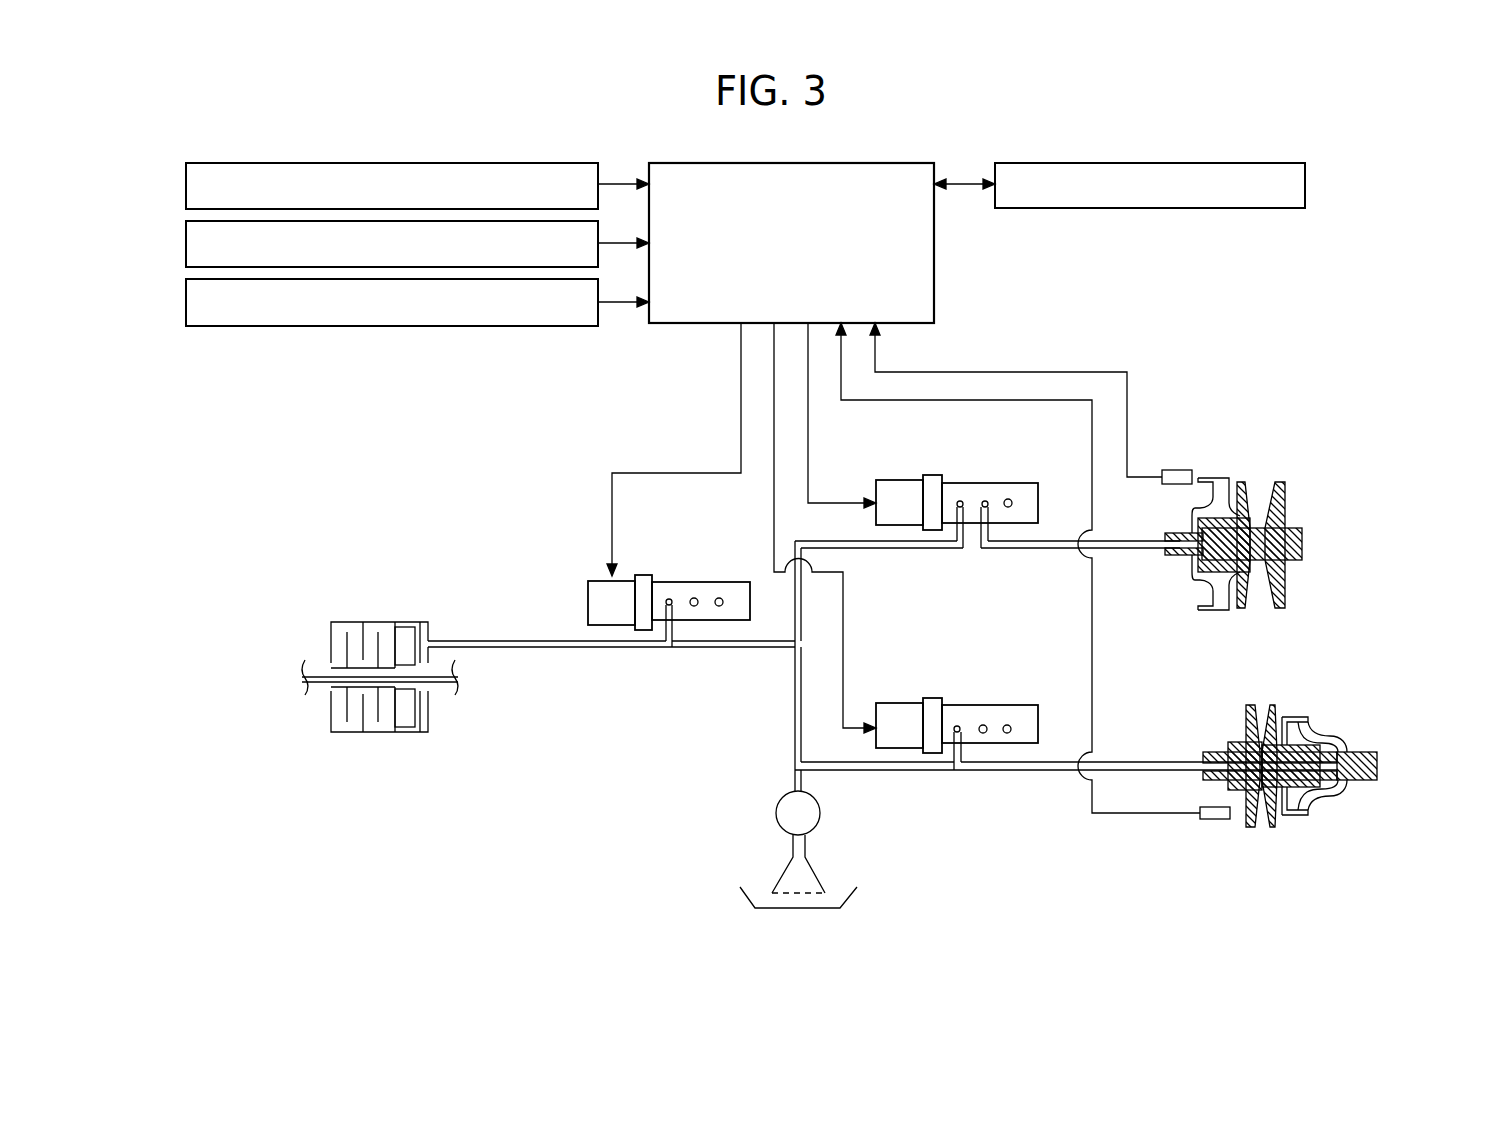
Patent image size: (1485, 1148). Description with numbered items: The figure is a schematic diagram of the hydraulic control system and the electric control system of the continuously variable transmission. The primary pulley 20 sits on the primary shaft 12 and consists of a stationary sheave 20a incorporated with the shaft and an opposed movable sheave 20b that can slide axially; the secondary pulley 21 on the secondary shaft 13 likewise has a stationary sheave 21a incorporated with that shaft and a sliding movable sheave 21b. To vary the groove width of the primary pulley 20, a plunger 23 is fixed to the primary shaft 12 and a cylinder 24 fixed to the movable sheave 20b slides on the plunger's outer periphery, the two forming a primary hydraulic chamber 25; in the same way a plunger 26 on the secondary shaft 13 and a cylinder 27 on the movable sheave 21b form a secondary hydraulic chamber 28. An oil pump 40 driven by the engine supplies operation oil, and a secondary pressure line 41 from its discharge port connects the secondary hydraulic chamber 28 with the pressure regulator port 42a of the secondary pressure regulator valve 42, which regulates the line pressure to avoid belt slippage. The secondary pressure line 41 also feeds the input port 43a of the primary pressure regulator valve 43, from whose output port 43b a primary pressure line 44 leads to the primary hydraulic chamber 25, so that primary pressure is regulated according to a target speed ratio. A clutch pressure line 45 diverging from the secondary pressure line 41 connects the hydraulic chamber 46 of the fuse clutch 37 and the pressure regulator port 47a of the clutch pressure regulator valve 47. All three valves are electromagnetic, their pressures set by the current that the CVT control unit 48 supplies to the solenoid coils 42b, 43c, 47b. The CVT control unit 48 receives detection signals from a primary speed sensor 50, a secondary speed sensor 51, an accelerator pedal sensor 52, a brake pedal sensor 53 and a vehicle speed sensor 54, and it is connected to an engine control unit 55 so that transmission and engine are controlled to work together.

The primary shaft 12 is at (1305, 544).
The secondary shaft 13 is at (1380, 766).
The primary pulley 20 is at (1247, 522).
The stationary sheave 20a is at (1282, 480).
The movable sheave 20b is at (1242, 480).
The secondary pulley 21 is at (1323, 803).
The stationary sheave 21a is at (1250, 830).
The movable sheave 21b is at (1272, 830).
The plunger 23 is at (1192, 512).
The cylinder 24 is at (1218, 612).
The primary hydraulic chamber 25 is at (1212, 580).
The plunger 26 is at (1326, 763).
The cylinder 27 is at (1293, 716).
The secondary hydraulic chamber 28 is at (1315, 828).
The fuse clutch 37 is at (399, 720).
The oil pump 40 is at (776, 814).
The secondary pressure line 41 is at (795, 741).
The secondary pressure regulator valve 42 is at (956, 708).
The pressure regulator port 42a is at (957, 722).
The solenoid coil 42b is at (893, 710).
The primary pressure regulator valve 43 is at (954, 476).
The input port 43a is at (960, 500).
The output port 43b is at (985, 500).
The solenoid coil 43c is at (889, 490).
The primary pressure line 44 is at (1035, 550).
The clutch pressure line 45 is at (699, 650).
The hydraulic chamber 46 is at (428, 728).
The clutch pressure regulator valve 47 is at (657, 586).
The pressure regulator port 47a is at (669, 598).
The solenoid coil 47b is at (590, 585).
The CVT control unit 48 is at (934, 247).
The primary speed sensor 50 is at (1176, 470).
The secondary speed sensor 51 is at (1210, 820).
The accelerator pedal sensor 52 is at (186, 182).
The brake pedal sensor 53 is at (186, 241).
The vehicle speed sensor 54 is at (186, 299).
The engine control unit 55 is at (1168, 208).